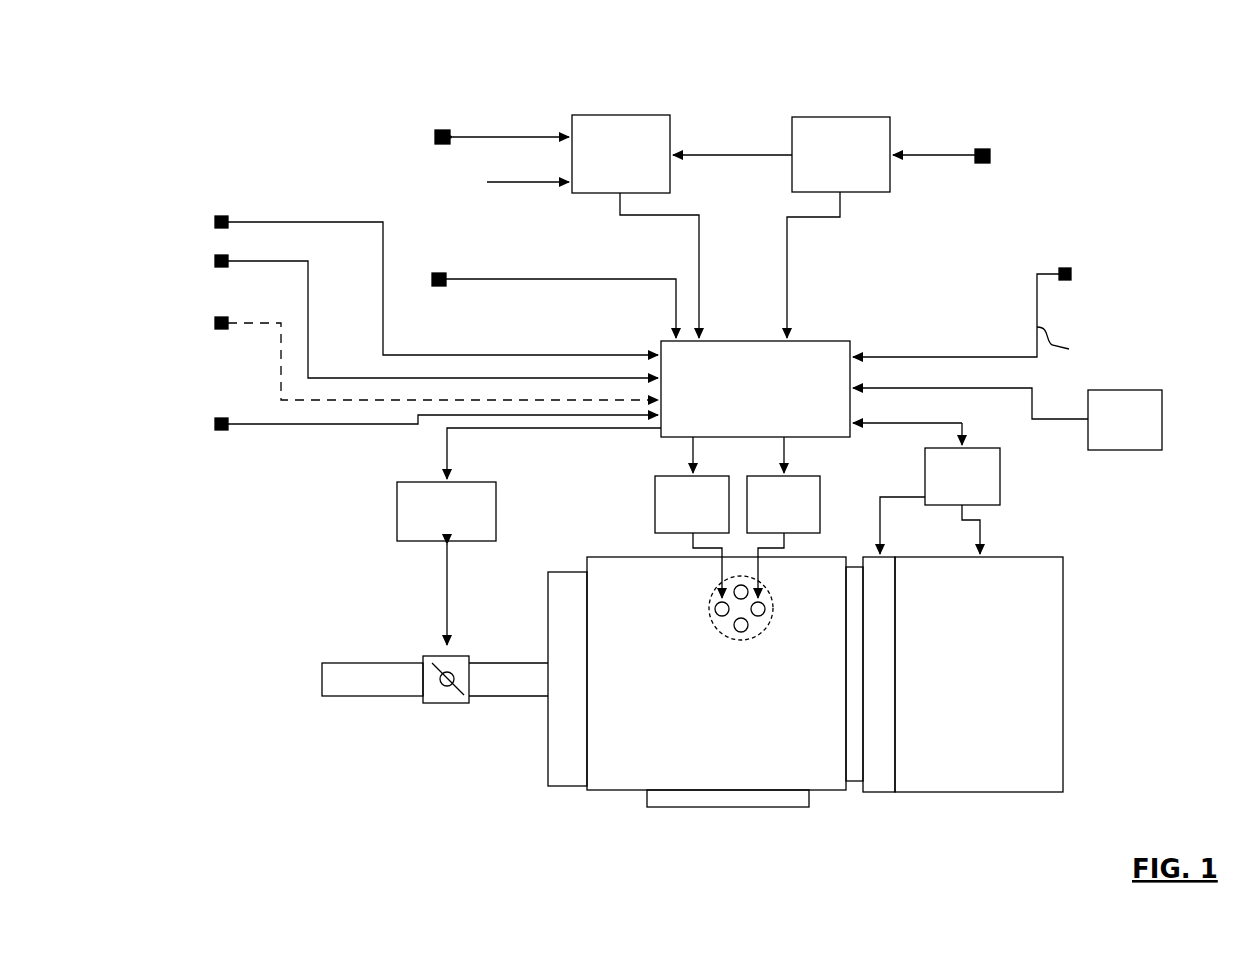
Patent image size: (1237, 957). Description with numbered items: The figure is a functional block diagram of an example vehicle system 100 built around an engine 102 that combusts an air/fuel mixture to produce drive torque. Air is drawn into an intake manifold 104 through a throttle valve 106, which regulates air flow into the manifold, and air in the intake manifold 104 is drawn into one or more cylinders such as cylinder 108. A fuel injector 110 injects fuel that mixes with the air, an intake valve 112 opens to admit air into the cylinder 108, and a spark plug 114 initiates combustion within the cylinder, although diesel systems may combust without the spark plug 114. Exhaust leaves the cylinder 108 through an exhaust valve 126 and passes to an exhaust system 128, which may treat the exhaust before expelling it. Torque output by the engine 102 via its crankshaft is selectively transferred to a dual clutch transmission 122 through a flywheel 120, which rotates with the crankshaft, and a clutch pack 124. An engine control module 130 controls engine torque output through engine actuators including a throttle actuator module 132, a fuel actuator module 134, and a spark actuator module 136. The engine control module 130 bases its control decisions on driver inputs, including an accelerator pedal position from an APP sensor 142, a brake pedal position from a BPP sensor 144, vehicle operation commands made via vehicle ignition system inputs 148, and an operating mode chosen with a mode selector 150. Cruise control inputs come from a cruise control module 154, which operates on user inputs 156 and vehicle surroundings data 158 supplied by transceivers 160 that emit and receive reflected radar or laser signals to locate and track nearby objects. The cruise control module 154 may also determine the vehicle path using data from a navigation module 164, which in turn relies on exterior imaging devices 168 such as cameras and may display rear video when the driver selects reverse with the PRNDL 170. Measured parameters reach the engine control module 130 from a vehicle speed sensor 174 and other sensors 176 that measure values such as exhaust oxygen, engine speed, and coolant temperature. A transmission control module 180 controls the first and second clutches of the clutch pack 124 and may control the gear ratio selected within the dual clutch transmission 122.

The vehicle system 100 is at (230, 101).
The engine 102 is at (633, 790).
The intake manifold 104 is at (547, 585).
The throttle valve 106 is at (425, 655).
The cylinder 108 is at (713, 627).
The fuel injector 110 is at (715, 607).
The intake valve 112 is at (741, 599).
The spark plug 114 is at (765, 608).
The flywheel 120 is at (858, 785).
The dual clutch transmission 122 is at (980, 792).
The clutch pack 124 is at (878, 792).
The exhaust valve 126 is at (741, 632).
The exhaust system 128 is at (725, 807).
The engine control module 130 is at (723, 341).
The throttle actuator module 132 is at (425, 482).
The fuel actuator module 134 is at (717, 476).
The spark actuator module 136 is at (810, 476).
The APP sensor 142 is at (215, 216).
The BPP sensor 144 is at (215, 255).
The vehicle ignition system inputs 148 is at (215, 418).
The mode selector 150 is at (215, 317).
The cruise control module 154 is at (580, 115).
The user inputs 156 is at (537, 182).
The vehicle surroundings data 158 is at (513, 137).
The transceivers 160 is at (445, 130).
The navigation module 164 is at (872, 117).
The exterior imaging devices 168 is at (987, 149).
The PRNDL 170 is at (437, 273).
The vehicle speed sensor 174 is at (1071, 274).
The other sensors 176 is at (1162, 420).
The transmission control module 180 is at (1000, 477).